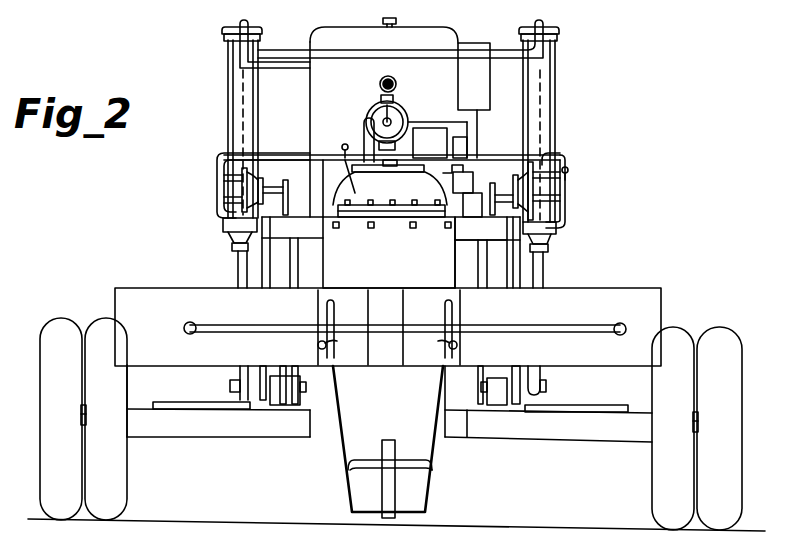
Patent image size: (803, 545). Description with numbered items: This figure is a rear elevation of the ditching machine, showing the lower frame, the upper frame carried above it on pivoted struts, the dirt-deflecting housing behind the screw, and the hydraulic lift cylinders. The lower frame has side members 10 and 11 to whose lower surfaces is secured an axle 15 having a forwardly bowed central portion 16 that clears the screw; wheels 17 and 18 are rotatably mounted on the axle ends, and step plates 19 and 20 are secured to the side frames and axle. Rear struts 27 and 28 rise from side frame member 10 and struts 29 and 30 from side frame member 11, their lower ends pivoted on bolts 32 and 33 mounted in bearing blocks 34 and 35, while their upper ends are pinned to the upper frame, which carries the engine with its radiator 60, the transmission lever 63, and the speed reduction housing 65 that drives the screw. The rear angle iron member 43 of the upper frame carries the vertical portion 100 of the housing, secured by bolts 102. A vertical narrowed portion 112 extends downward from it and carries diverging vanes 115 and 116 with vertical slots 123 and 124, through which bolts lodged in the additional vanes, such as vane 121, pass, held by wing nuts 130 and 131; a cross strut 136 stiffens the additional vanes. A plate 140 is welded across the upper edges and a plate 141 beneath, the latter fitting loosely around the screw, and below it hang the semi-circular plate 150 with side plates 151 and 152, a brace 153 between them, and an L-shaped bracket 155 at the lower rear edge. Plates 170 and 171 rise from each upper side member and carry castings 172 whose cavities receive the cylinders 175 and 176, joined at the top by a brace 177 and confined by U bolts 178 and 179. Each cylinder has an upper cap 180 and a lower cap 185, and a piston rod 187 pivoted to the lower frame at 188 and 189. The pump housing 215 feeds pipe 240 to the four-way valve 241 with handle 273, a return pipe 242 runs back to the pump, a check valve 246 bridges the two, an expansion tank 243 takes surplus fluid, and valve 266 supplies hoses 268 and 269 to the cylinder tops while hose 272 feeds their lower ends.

The side member of the lower frame 10 is at (282, 368).
The side member of the lower frame 11 is at (490, 372).
The axle 15 is at (578, 443).
The bowed central portion of the axle 16 is at (454, 401).
The wheel 17 is at (391, 424).
The wheel 18 is at (389, 424).
The step plate 19 is at (598, 405).
The step plate 20 is at (174, 400).
The strut 27 is at (268, 275).
The strut 28 is at (305, 263).
The strut 29 is at (470, 276).
The strut 30 is at (505, 283).
The bolt 32 is at (294, 390).
The bolt 33 is at (480, 387).
The bearing block 34 is at (270, 402).
The bearing block 35 is at (486, 402).
The rear angle iron member 43 is at (481, 229).
The radiator 60 is at (384, 34).
The lever 63 is at (344, 162).
The speed reduction housing 65 is at (390, 188).
The vertical portion of the housing 100 is at (389, 252).
The bolts 102 is at (348, 230).
The vertical narrowed portion 112 is at (389, 327).
The vane 115 is at (408, 352).
The vane 116 is at (364, 344).
The vane 121 is at (145, 298).
The slot 123 is at (454, 314).
The slot 124 is at (322, 315).
The nut 130 is at (458, 345).
The nut 131 is at (318, 345).
The cross strut 136 is at (540, 332).
The plate 140 is at (387, 292).
The plate 141 is at (425, 380).
The semi-circular plate 150 is at (388, 439).
The side plate 151 is at (430, 470).
The side plate 152 is at (343, 476).
The brace 153 is at (400, 458).
The L-shaped bracket 155 is at (386, 478).
The plate 170 is at (288, 190).
The plate 171 is at (471, 194).
The casting 172 is at (260, 180).
The cylinder 175 is at (548, 106).
The cylinder 176 is at (228, 100).
The brace 177 is at (300, 54).
The U bolt 178 is at (222, 178).
The U bolt 179 is at (224, 200).
The cap 180 is at (222, 33).
The cap 185 is at (222, 228).
The piston rod 187 is at (238, 272).
The pivotal connection 188 is at (546, 386).
The pivotal connection 189 is at (230, 380).
The pump housing 215 is at (470, 170).
The pipe 240 is at (436, 124).
The four-way valve 241 is at (378, 95).
The return pipe 242 is at (362, 128).
The expansion tank 243 is at (474, 76).
The check valve 246 is at (454, 146).
The valve 266 is at (398, 84).
The flexible pipe 268 is at (512, 78).
The flexible pipe 269 is at (366, 74).
The flexible pipe 272 is at (298, 153).
The handle 273 is at (372, 110).